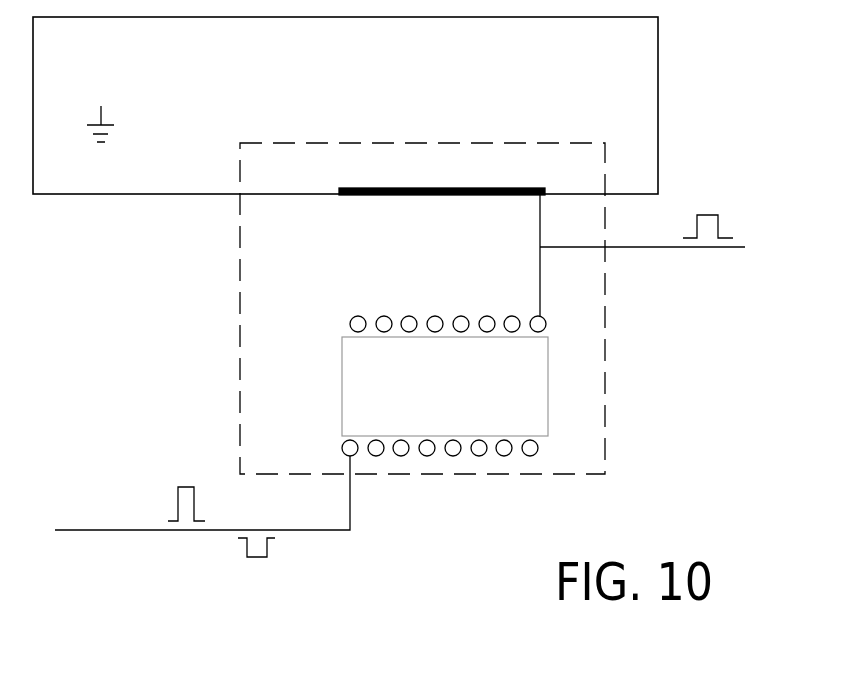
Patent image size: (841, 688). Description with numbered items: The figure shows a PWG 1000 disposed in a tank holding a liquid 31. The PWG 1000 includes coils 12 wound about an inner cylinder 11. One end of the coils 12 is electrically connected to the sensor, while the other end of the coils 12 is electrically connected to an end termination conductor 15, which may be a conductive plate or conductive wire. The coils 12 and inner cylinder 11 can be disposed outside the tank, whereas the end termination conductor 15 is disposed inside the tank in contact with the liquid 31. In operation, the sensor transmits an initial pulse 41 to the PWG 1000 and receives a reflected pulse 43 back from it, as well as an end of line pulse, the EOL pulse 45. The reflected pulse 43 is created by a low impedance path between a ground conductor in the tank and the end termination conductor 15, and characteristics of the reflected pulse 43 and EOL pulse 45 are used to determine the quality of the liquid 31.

The liquid 31 is at (238, 85).
The PWG 1000 is at (434, 271).
The end termination conductor 15 is at (393, 184).
The coils 12 is at (349, 322).
The inner cylinder 11 is at (433, 398).
The EOL pulse 45 is at (732, 221).
The initial pulse 41 is at (164, 503).
The reflected pulse 43 is at (236, 558).